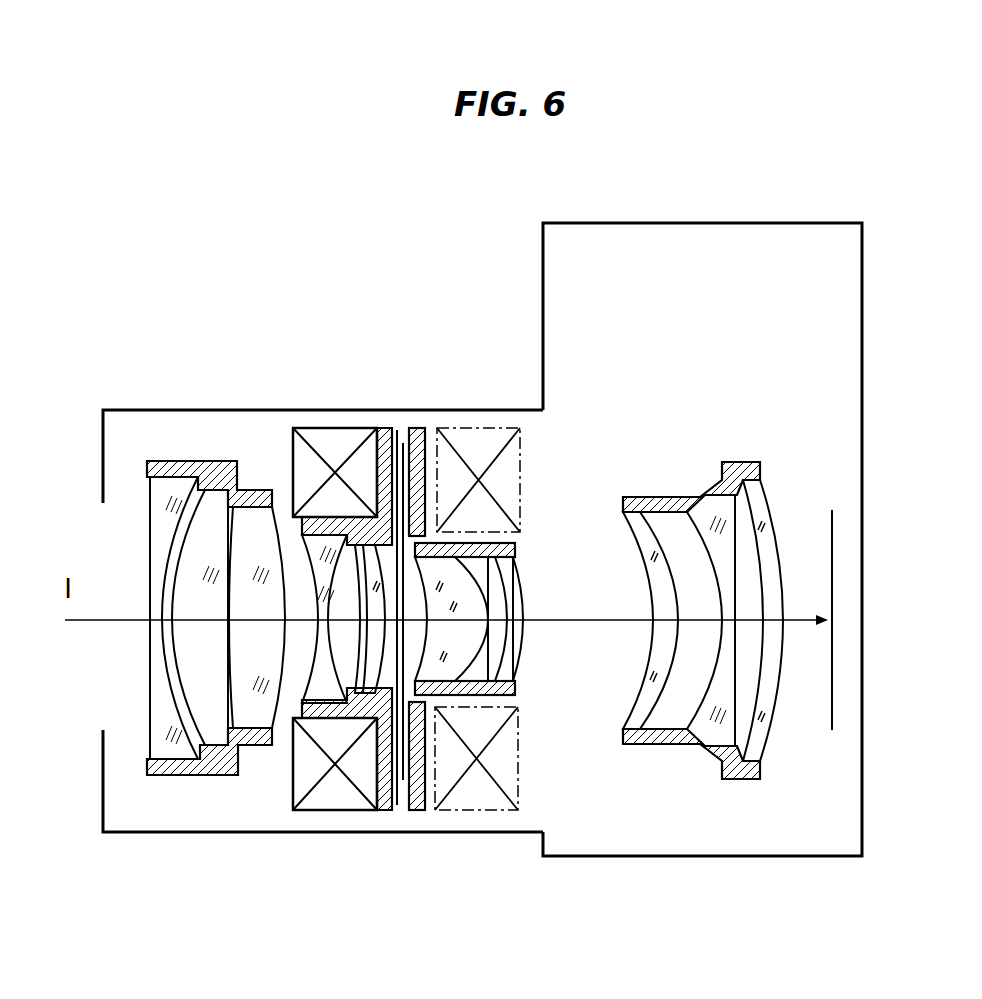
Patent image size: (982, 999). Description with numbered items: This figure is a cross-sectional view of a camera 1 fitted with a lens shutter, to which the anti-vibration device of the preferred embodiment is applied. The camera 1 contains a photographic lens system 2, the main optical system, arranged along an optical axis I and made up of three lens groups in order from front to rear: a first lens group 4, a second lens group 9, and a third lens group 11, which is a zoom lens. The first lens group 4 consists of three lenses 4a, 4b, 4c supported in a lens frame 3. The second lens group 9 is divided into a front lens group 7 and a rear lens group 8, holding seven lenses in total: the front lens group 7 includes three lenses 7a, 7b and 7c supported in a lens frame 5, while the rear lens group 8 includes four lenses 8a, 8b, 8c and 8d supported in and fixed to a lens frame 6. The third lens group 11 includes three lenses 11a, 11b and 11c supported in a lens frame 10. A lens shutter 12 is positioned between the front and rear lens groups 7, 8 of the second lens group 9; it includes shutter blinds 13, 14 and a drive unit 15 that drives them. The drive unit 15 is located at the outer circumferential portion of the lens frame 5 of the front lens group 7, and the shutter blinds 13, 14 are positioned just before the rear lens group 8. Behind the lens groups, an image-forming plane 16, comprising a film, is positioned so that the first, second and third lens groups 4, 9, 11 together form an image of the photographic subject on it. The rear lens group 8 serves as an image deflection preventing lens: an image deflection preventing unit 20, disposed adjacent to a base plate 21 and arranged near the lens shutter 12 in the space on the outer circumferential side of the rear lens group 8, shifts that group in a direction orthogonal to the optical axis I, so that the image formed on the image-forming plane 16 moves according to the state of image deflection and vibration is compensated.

The camera 1 is at (755, 214).
The photographic lens system 2 is at (204, 437).
The lens frame 3 is at (147, 470).
The first lens group 4 is at (204, 716).
The lens 4a is at (172, 752).
The lens 4b is at (212, 732).
The lens 4c is at (263, 705).
The lens frame 5 is at (333, 722).
The lens frame 6 is at (440, 707).
The front lens group 7 is at (317, 477).
The lens 7a is at (318, 565).
The lens 7b is at (355, 553).
The lens 7c is at (372, 578).
The rear lens group 8 is at (526, 749).
The lens 8a is at (450, 673).
The lens 8b is at (477, 673).
The lens 8c is at (502, 673).
The lens 8d is at (522, 668).
The second lens group 9 is at (294, 560).
The lens frame 10 is at (692, 490).
The third lens group 11 is at (736, 718).
The lens 11a is at (640, 722).
The lens 11b is at (712, 735).
The lens 11c is at (757, 735).
The lens shutter 12 is at (360, 700).
The shutter blind 13 is at (432, 505).
The shutter blind 14 is at (397, 790).
The drive unit 15 is at (305, 812).
The image-forming plane 16 is at (832, 592).
The image deflection preventing unit 20 is at (485, 445).
The base plate 21 is at (410, 442).